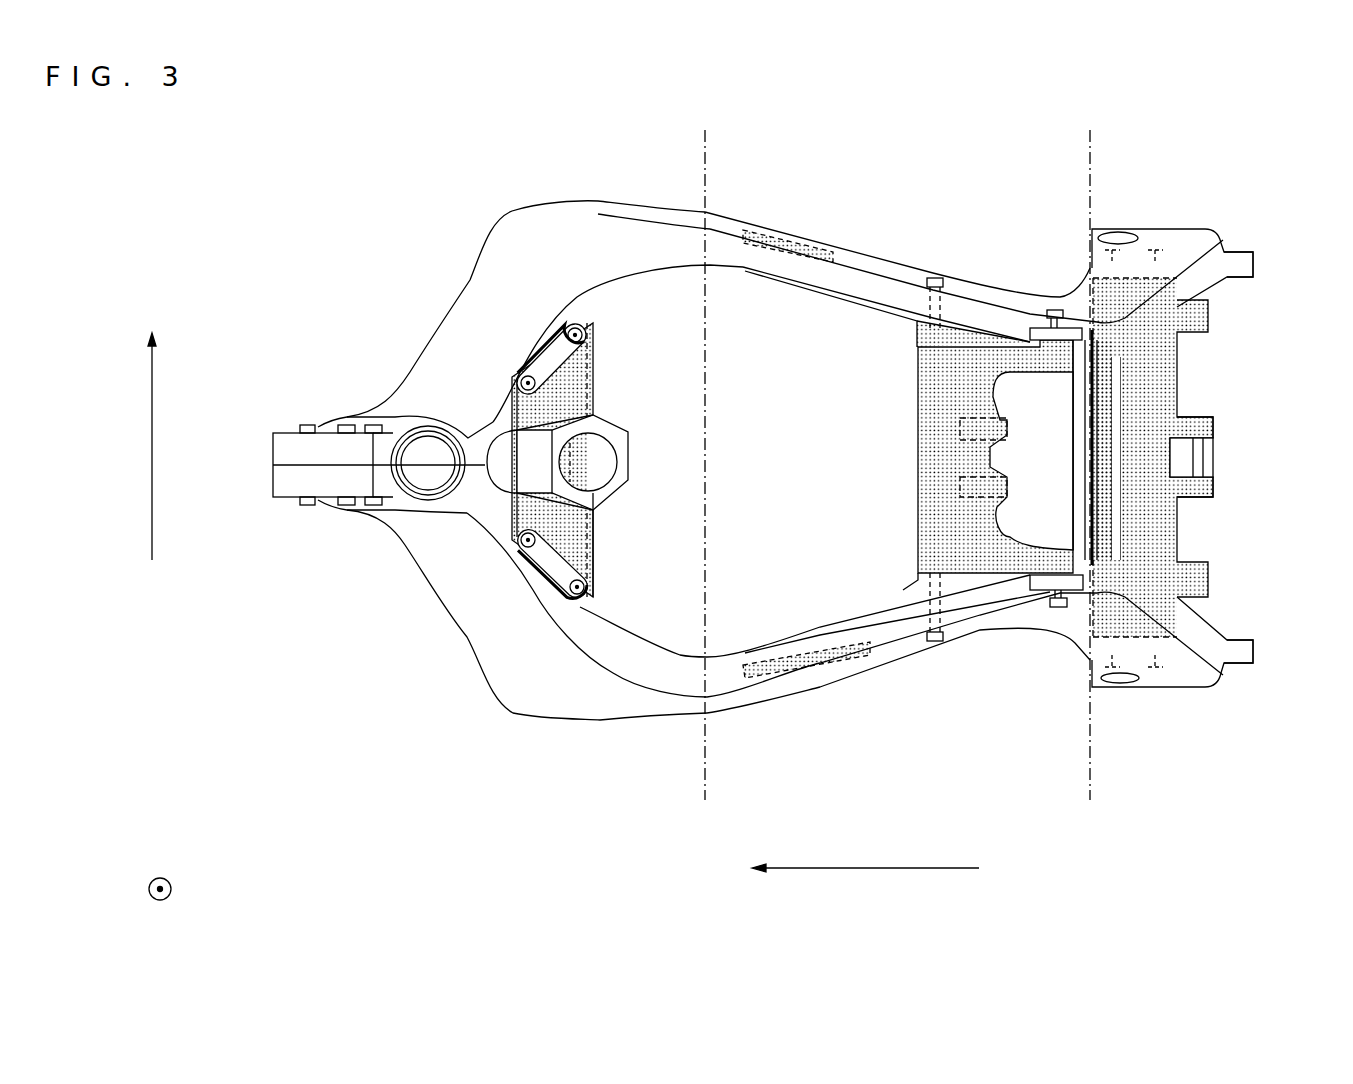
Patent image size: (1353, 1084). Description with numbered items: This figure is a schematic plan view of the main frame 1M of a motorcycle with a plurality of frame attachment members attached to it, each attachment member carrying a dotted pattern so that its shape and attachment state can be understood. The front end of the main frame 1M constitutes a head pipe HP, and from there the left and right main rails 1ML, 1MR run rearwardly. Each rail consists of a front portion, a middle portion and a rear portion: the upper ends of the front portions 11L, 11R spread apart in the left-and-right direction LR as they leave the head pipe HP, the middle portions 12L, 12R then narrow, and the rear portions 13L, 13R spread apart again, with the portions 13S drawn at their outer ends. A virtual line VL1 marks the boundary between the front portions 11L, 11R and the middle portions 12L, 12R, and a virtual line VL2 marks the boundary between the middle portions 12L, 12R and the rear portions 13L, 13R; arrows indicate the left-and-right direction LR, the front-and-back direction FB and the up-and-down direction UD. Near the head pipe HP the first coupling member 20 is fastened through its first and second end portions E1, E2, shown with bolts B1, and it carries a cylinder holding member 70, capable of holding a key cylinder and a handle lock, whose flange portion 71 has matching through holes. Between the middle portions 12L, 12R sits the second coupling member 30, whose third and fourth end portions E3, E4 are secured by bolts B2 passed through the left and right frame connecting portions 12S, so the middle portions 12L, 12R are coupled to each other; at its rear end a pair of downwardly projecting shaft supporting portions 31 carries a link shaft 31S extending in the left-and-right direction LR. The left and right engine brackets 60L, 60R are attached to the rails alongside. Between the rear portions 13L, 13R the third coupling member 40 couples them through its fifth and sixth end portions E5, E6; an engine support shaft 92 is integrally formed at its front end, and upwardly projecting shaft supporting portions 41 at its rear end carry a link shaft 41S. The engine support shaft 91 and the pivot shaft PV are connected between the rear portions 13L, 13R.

The main frame 1M is at (310, 235).
The right main rail 1MR is at (582, 178).
The left main rail 1ML is at (585, 740).
The right front portion 11R is at (483, 297).
The left front portion 11L is at (487, 638).
The right middle portion 12R is at (887, 273).
The left middle portion 12L is at (890, 650).
The frame connecting portion 12S is at (1033, 323).
The right rear portion 13R is at (1160, 240).
The left rear portion 13L is at (1163, 673).
The bracket support portion 13S is at (1253, 262).
The first coupling member 20 is at (593, 360).
The second coupling member 30 is at (943, 487).
The shaft supporting portion 31 is at (917, 390).
The link shaft 31S is at (1000, 455).
The third coupling member 40 is at (1160, 408).
The shaft supporting portion 41 is at (1213, 427).
The link shaft 41S is at (1197, 458).
The right engine bracket 60R is at (757, 240).
The left engine bracket 60L is at (767, 677).
The cylinder holding member 70 is at (600, 417).
The flange portion 71 is at (597, 552).
The engine support shaft 91 is at (1090, 485).
The engine support shaft 92 is at (1073, 470).
The bolt B1 is at (520, 385).
The bolt B2 is at (1057, 313).
The first end portion E1 is at (545, 590).
The second end portion E2 is at (537, 353).
The third end portion E3 is at (990, 553).
The fourth end portion E4 is at (990, 363).
The fifth end portion E5 is at (1193, 607).
The sixth end portion E6 is at (1210, 308).
The head pipe HP is at (423, 510).
The pivot shaft PV is at (1120, 380).
The virtual line VL1 is at (700, 145).
The virtual line VL2 is at (1082, 145).
The left-and-right direction LR is at (150, 445).
The front-back direction FB is at (887, 869).
The up-down direction UD is at (170, 897).